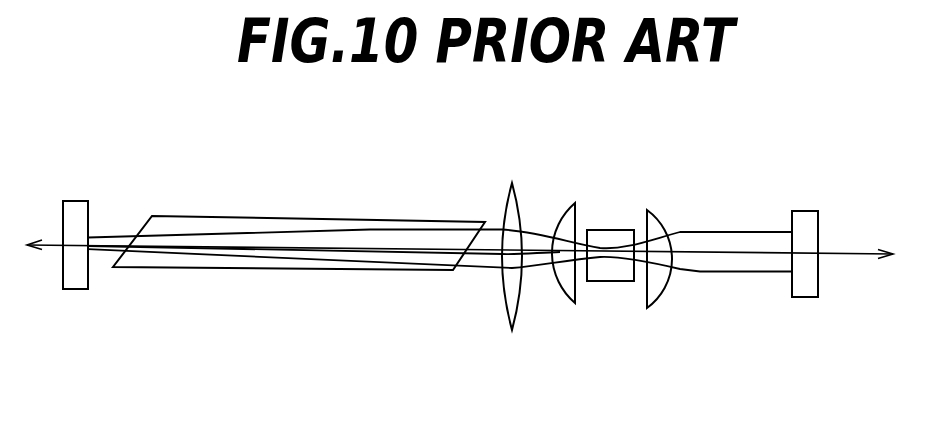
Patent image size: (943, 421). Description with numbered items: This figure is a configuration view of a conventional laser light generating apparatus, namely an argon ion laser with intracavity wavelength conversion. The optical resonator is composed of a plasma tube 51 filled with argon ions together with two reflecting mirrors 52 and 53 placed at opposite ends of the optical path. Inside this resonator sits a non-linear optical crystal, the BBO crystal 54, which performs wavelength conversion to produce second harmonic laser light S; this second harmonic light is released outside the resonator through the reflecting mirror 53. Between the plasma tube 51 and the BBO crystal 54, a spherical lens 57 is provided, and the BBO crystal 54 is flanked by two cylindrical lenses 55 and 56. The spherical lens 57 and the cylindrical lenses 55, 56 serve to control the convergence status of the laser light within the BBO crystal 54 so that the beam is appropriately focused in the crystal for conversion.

The plasma tube 51 is at (298, 217).
The reflecting mirror 52 is at (73, 210).
The reflecting mirror 53 is at (807, 222).
The BBO crystal 54 is at (602, 283).
The cylindrical lens 55 is at (580, 195).
The cylindrical lens 56 is at (645, 197).
The spherical lens 57 is at (507, 197).
The second harmonic laser light S is at (855, 256).